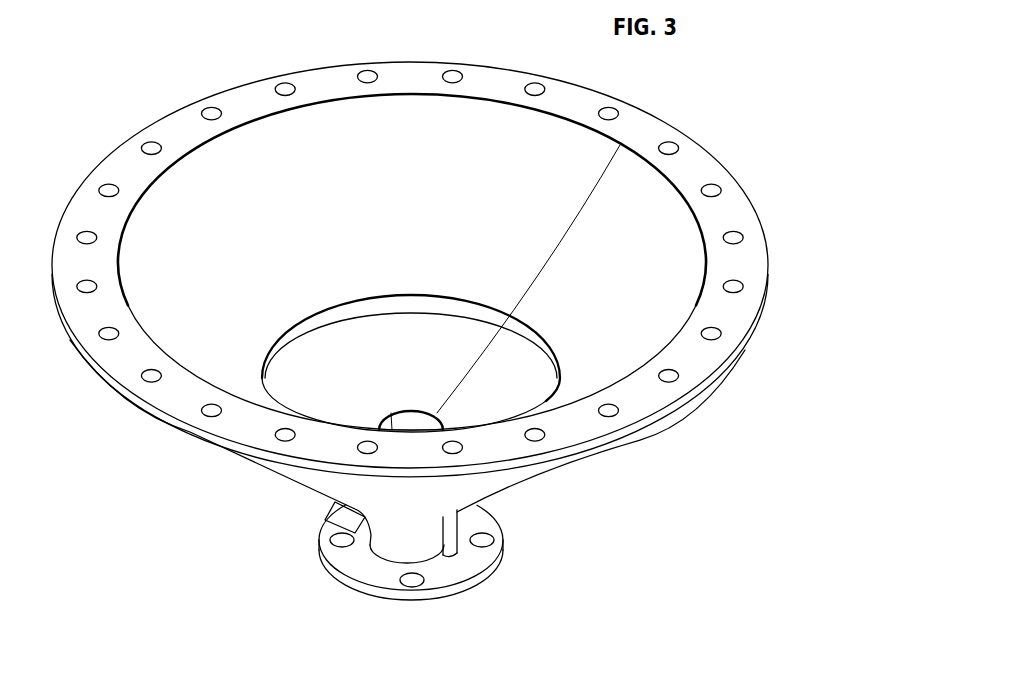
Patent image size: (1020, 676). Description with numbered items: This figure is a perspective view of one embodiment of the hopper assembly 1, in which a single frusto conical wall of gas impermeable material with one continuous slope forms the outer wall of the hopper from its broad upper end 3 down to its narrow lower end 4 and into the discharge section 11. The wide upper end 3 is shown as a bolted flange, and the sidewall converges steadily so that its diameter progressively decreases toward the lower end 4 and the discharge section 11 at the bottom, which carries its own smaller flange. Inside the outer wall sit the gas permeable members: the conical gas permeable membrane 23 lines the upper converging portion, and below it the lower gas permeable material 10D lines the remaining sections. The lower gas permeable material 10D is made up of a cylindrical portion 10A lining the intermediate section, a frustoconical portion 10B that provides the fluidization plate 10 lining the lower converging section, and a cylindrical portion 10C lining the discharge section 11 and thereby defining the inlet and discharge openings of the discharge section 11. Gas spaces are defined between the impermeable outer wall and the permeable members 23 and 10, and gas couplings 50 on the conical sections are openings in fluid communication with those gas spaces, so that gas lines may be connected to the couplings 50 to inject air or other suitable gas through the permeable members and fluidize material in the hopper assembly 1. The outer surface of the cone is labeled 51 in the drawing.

The hopper assembly 1 is at (114, 84).
The upper end 3 is at (235, 52).
The lower end 4 is at (563, 552).
The fluidization plate 10 is at (304, 456).
The cylindrical portion of the gas permeable material 10A is at (320, 323).
The frustoconical portion of the lower gas permeable material 10B is at (470, 353).
The cylindrical portion of the lower gas permeable material 10C is at (400, 423).
The lower gas permeable material 10D is at (288, 395).
The discharge section 11 is at (503, 596).
The gas permeable membrane 23 is at (224, 269).
The gas couplings 50 is at (228, 452).
The outer funnel surface 51 is at (488, 478).